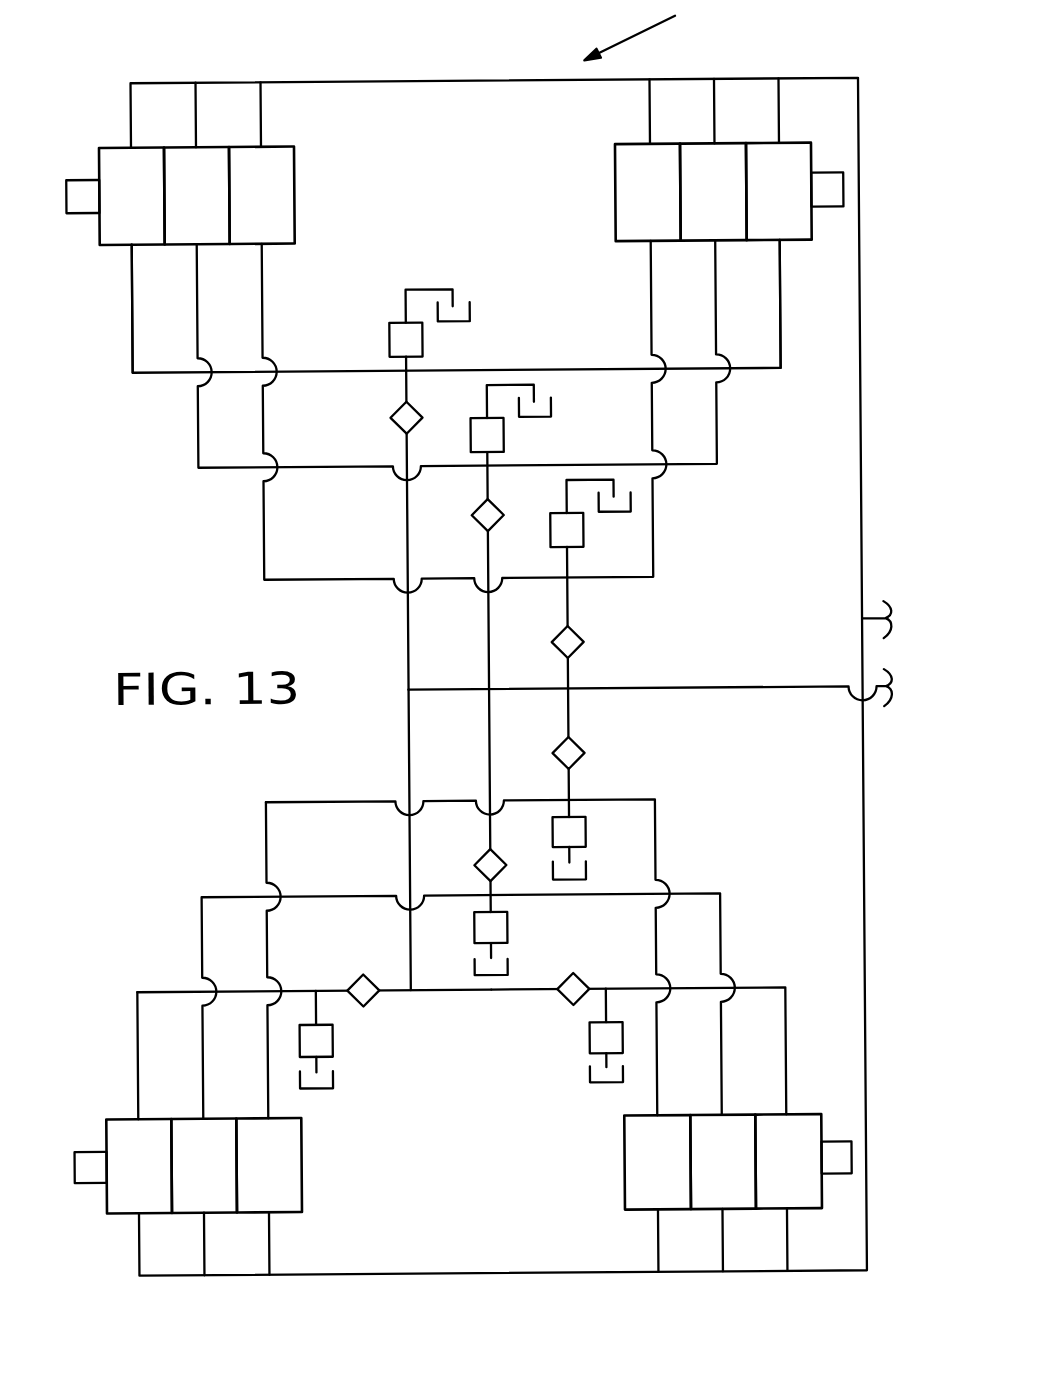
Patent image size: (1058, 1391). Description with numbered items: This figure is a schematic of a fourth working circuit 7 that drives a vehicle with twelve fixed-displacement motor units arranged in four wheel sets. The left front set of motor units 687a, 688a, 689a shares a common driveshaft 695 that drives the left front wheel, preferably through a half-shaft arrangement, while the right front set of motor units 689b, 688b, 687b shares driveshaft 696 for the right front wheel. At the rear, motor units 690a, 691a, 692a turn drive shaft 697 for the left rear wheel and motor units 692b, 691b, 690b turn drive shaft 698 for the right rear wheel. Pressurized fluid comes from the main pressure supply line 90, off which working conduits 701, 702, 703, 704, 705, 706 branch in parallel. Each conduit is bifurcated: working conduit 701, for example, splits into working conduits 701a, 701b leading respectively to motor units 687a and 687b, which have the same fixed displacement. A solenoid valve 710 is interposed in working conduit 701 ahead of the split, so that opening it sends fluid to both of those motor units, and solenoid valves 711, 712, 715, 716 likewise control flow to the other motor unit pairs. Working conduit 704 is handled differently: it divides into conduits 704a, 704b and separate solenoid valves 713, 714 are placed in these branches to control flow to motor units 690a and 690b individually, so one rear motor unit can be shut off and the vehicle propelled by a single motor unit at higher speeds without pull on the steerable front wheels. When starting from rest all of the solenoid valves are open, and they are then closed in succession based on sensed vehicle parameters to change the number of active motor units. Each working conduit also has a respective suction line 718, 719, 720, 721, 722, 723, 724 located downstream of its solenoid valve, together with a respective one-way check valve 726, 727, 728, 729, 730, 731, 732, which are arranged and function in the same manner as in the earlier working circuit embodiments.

The working circuit 7 is at (655, 30).
The motor unit 687a is at (118, 210).
The motor unit 688a is at (183, 210).
The motor unit 689a is at (248, 210).
The motor unit 687b is at (765, 210).
The motor unit 688b is at (735, 210).
The motor unit 689b is at (634, 210).
The motor unit 690a is at (118, 1180).
The motor unit 691a is at (183, 1180).
The motor unit 692a is at (248, 1180).
The motor unit 690b is at (803, 1180).
The motor unit 691b is at (702, 1180).
The motor unit 692b is at (672, 1180).
The driveshaft 695 is at (86, 200).
The driveshaft 696 is at (823, 199).
The drive shaft 697 is at (93, 1162).
The drive shaft 698 is at (835, 1152).
The working conduit 701 is at (407, 626).
The working conduit 701a is at (327, 368).
The working conduit 701b is at (548, 368).
The working conduit 702 is at (487, 667).
The working conduit 703 is at (573, 676).
The working conduit 704 is at (407, 762).
The conduit 704a is at (393, 996).
The conduit 704b is at (535, 993).
The working conduit 705 is at (487, 768).
The working conduit 706 is at (573, 713).
The solenoid valve 710 is at (393, 418).
The solenoid valve 711 is at (491, 516).
The solenoid valve 712 is at (573, 633).
The solenoid valve 713 is at (367, 985).
The solenoid valve 714 is at (575, 988).
The solenoid valve 715 is at (480, 872).
The solenoid valve 716 is at (578, 754).
The suction line 718 is at (409, 289).
The suction line 719 is at (489, 385).
The suction line 720 is at (596, 480).
The suction line 721 is at (317, 1065).
The suction line 722 is at (608, 1060).
The suction line 723 is at (495, 958).
The suction line 724 is at (578, 857).
The one-way check valve 726 is at (410, 342).
The one-way check valve 727 is at (493, 432).
The one-way check valve 728 is at (573, 533).
The one-way check valve 729 is at (320, 1037).
The one-way check valve 730 is at (608, 1038).
The one-way check valve 731 is at (495, 930).
The one-way check valve 732 is at (580, 832).
The main pressure supply line 90 is at (700, 690).